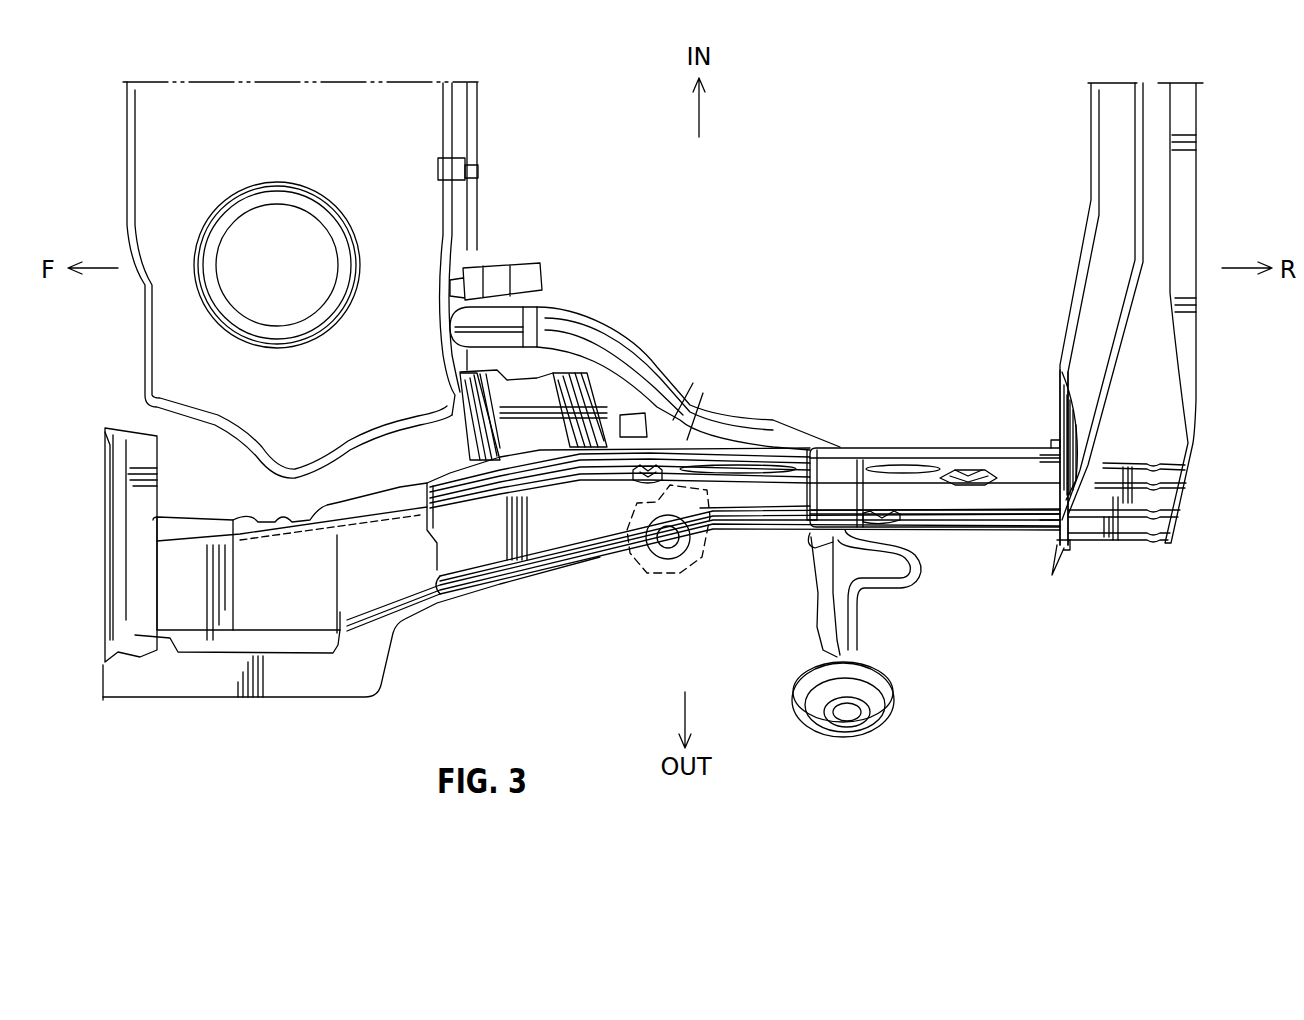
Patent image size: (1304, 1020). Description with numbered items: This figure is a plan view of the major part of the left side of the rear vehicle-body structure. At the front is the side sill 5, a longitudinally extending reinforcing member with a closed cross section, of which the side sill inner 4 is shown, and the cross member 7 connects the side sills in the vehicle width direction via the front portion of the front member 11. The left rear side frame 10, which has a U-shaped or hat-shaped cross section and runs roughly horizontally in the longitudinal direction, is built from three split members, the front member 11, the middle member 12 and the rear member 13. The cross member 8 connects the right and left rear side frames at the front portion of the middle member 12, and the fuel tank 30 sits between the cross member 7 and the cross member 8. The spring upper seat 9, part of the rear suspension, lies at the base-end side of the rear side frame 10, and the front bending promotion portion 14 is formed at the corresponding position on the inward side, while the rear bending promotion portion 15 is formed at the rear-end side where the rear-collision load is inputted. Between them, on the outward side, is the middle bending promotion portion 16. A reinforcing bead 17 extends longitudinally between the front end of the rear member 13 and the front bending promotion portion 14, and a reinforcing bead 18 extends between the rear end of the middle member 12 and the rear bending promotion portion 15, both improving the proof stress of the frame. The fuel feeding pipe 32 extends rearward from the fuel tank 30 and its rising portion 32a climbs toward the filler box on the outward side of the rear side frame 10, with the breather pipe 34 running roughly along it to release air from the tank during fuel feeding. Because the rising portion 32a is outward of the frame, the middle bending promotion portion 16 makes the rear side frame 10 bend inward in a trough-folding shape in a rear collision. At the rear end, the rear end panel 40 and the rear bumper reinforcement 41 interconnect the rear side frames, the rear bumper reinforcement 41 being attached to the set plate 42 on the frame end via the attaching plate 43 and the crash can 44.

The side sill inner 4 is at (202, 690).
The side sill 5 is at (276, 712).
The cross member 7 is at (160, 478).
The cross member 8 is at (543, 373).
The spring upper seat 9 is at (633, 565).
The rear side frame 10 is at (761, 544).
The front member 11 is at (365, 495).
The middle member 12 is at (557, 570).
The rear member 13 is at (952, 448).
The front bending promotion portion 14 is at (648, 463).
The rear bending promotion portion 15 is at (970, 470).
The middle bending promotion portion 16 is at (880, 512).
The reinforcing bead 17 is at (725, 465).
The reinforcing bead 18 is at (907, 467).
The fuel tank 30 is at (269, 132).
The fuel feeding pipe 32 is at (790, 407).
The rising portion 32a is at (862, 598).
The breather pipe 34 is at (815, 602).
The rear end panel 40 is at (1090, 233).
The rear bumper reinforcement 41 is at (1200, 208).
The set plate 42 is at (1055, 445).
The attaching plate 43 is at (1068, 542).
The crash can 44 is at (1147, 463).